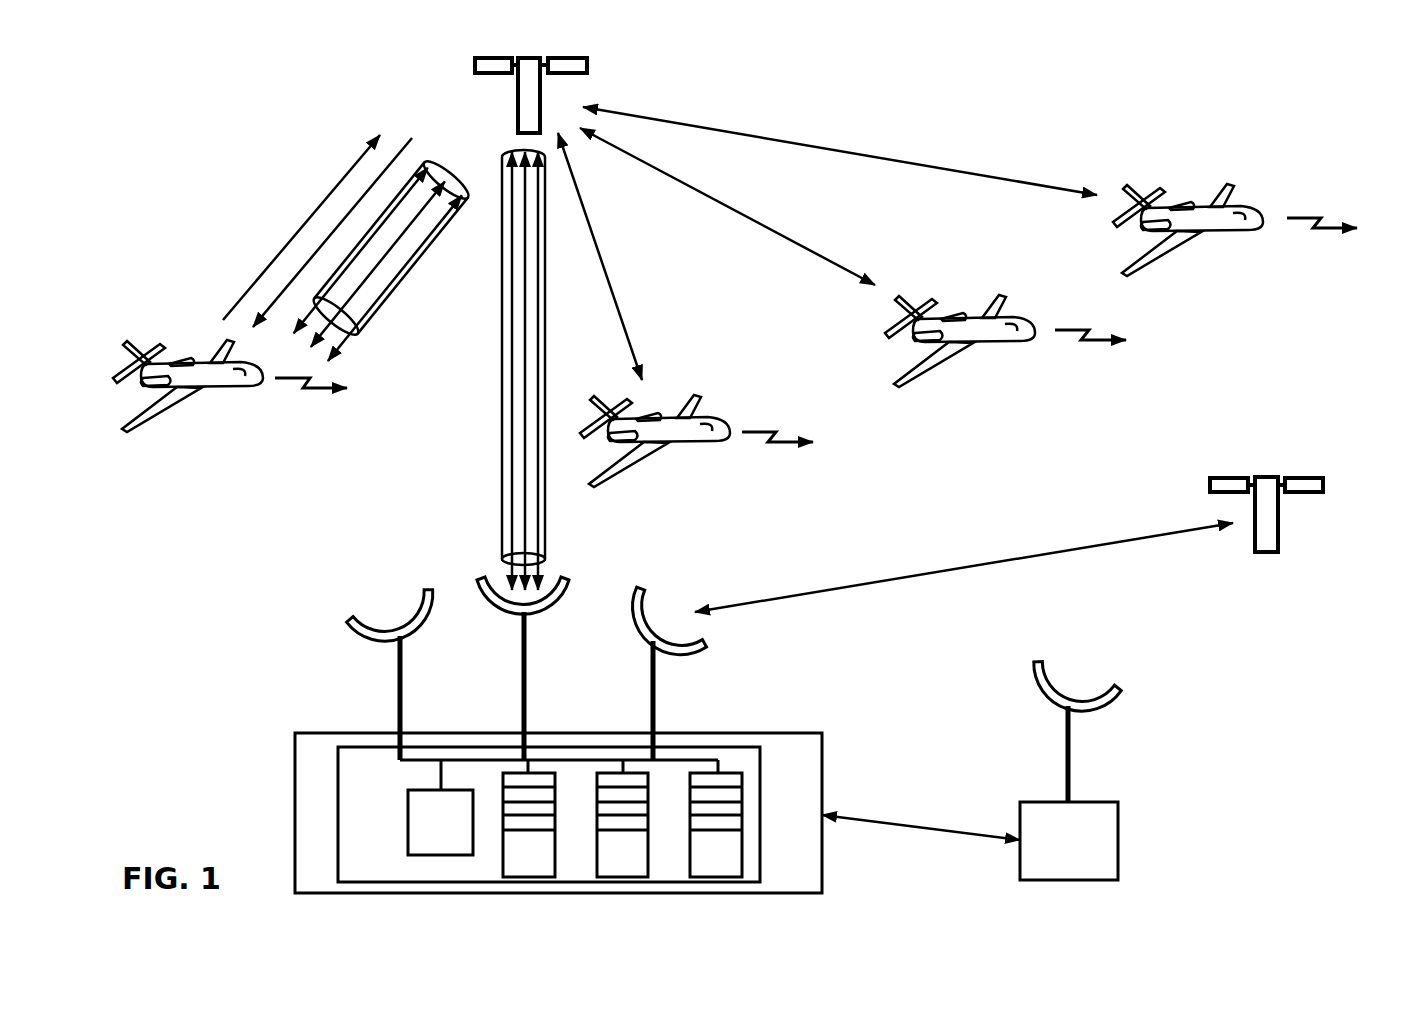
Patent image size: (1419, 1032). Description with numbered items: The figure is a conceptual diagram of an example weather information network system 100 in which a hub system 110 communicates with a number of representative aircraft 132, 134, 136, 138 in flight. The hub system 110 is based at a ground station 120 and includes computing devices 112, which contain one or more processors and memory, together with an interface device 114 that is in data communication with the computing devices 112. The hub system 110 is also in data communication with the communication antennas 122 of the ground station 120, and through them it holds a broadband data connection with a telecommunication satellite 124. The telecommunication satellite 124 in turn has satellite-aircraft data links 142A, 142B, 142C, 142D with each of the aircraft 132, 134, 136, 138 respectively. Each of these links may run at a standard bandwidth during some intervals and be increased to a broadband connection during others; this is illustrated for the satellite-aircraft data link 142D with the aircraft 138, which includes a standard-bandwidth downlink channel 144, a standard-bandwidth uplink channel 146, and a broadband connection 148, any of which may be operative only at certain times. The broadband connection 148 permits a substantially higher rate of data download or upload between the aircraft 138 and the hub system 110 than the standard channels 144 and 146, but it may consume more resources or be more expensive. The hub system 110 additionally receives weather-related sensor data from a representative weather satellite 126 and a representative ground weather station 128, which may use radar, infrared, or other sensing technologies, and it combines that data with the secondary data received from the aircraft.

The weather information network system 100 is at (762, 472).
The hub system 110 is at (477, 781).
The computing devices 112 is at (622, 779).
The interface device 114 is at (440, 822).
The ground station 120 is at (488, 735).
The communication antennas 122 is at (527, 668).
The telecommunication satellite 124 is at (596, 92).
The weather satellite 126 is at (1011, 498).
The ground weather station 128 is at (982, 769).
The aircraft 132 is at (696, 469).
The aircraft 134 is at (1005, 376).
The aircraft 136 is at (1235, 171).
The aircraft 138 is at (230, 430).
The satellite-aircraft data link 142A is at (636, 256).
The satellite-aircraft data link 142B is at (746, 206).
The satellite-aircraft data link 142C is at (840, 142).
The satellite-aircraft data link 142D is at (303, 231).
The standard-bandwidth downlink channel 144 is at (276, 227).
The standard-bandwidth uplink channel 146 is at (318, 232).
The broadband connection 148 is at (381, 262).